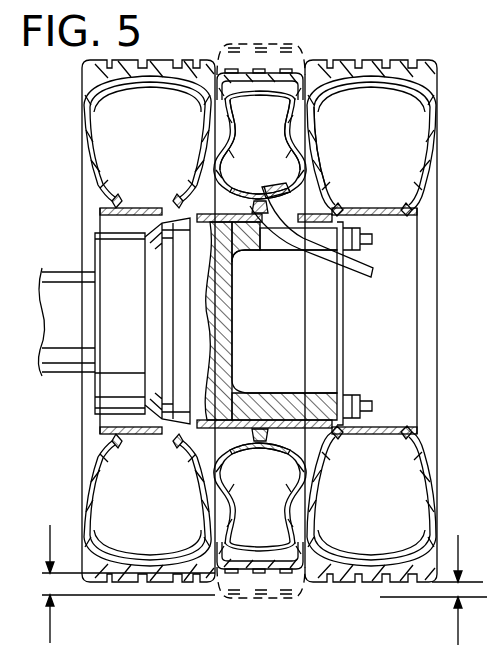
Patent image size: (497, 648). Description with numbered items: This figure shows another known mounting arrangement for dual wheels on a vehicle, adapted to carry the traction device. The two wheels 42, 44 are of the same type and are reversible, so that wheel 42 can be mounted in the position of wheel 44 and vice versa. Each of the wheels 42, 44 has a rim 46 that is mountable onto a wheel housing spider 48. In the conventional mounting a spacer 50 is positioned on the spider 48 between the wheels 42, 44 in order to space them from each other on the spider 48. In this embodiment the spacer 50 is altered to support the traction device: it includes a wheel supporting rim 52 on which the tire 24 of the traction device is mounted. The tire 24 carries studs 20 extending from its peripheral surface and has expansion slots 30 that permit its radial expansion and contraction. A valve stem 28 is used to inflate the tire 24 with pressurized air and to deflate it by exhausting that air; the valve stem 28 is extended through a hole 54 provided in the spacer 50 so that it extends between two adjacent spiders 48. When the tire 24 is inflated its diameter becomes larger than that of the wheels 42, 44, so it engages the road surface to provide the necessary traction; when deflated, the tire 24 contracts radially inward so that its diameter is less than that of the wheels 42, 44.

The studs 20 is at (261, 68).
The tire 24 is at (298, 82).
The valve stem 28 is at (360, 262).
The expansion slots 30 is at (243, 565).
The wheel 42 is at (368, 62).
The wheel 44 is at (150, 62).
The rim 46 is at (148, 208).
The wheel housing spider 48 is at (285, 250).
The spacer 50 is at (245, 250).
The wheel supporting rim 52 is at (250, 200).
The hole 54 is at (312, 205).